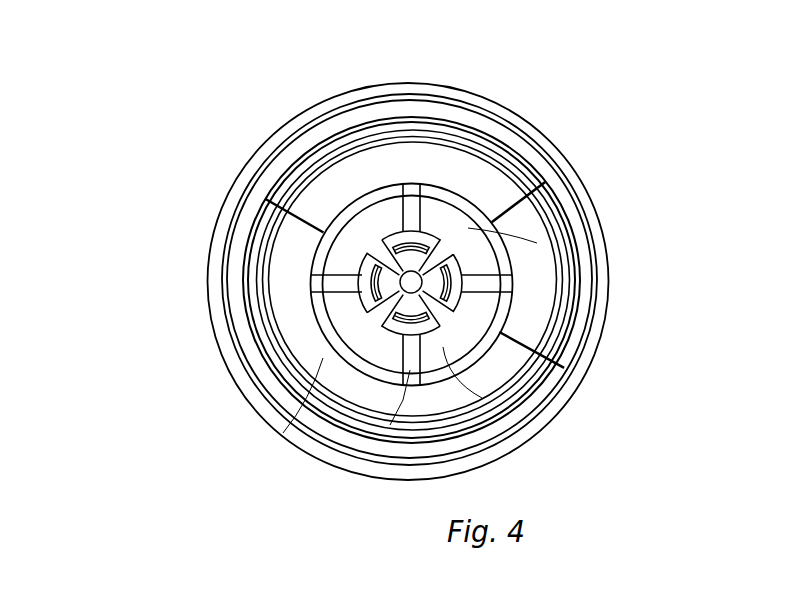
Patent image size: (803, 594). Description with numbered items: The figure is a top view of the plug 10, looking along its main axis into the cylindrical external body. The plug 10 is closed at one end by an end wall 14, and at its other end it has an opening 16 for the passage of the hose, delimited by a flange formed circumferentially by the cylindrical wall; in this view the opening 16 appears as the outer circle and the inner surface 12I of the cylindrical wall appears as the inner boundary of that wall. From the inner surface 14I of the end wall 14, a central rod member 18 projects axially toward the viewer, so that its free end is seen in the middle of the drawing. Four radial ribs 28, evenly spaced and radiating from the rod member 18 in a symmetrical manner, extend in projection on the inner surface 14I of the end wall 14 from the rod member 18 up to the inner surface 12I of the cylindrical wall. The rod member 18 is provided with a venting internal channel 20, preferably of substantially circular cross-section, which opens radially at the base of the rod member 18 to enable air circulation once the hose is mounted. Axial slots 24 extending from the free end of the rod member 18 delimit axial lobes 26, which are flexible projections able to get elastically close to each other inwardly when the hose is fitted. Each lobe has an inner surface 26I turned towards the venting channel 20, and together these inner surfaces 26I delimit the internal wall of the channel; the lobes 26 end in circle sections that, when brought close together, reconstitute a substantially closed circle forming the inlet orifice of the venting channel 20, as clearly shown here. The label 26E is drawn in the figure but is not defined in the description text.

The plug 10 is at (277, 75).
The inner surface of the cylindrical wall 12I is at (256, 318).
The end wall 14 is at (482, 398).
The inner surface of the end wall 14I is at (467, 242).
The opening 16 is at (609, 252).
The central rod member 18 is at (351, 264).
The venting internal channel 20 is at (365, 190).
The axial slots 24 is at (432, 312).
The axial lobes 26 is at (473, 267).
The finger outer edge 26E is at (421, 234).
The inner surface of the axial lobe 26I is at (403, 218).
The radial ribs 28 is at (300, 397).